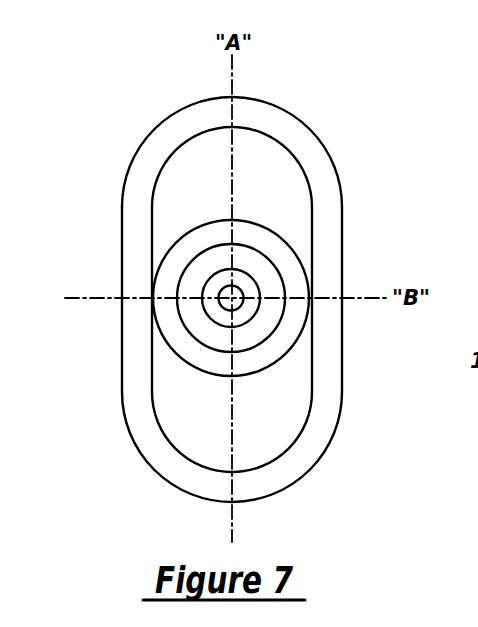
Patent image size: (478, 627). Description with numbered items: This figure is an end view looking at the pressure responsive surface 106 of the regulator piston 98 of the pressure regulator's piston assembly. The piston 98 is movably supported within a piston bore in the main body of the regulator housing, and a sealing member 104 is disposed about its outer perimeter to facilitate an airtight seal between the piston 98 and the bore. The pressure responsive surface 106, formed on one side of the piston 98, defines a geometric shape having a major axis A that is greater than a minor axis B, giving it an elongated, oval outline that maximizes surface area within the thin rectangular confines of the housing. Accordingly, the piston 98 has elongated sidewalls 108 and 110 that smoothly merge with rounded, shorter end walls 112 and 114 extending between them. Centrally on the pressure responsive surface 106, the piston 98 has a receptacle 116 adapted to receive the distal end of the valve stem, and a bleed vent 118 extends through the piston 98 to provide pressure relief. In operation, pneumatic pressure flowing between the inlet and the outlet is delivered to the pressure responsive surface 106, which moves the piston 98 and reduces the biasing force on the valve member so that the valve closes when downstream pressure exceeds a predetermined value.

The regulator piston 98 is at (291, 425).
The sealing member 104 is at (330, 217).
The pressure responsive surface 106 is at (290, 203).
The elongated sidewall 108 is at (342, 338).
The elongated sidewall 110 is at (122, 341).
The end wall 112 is at (262, 99).
The end wall 114 is at (248, 502).
The receptacle 116 is at (239, 307).
The bleed vent 118 is at (228, 285).